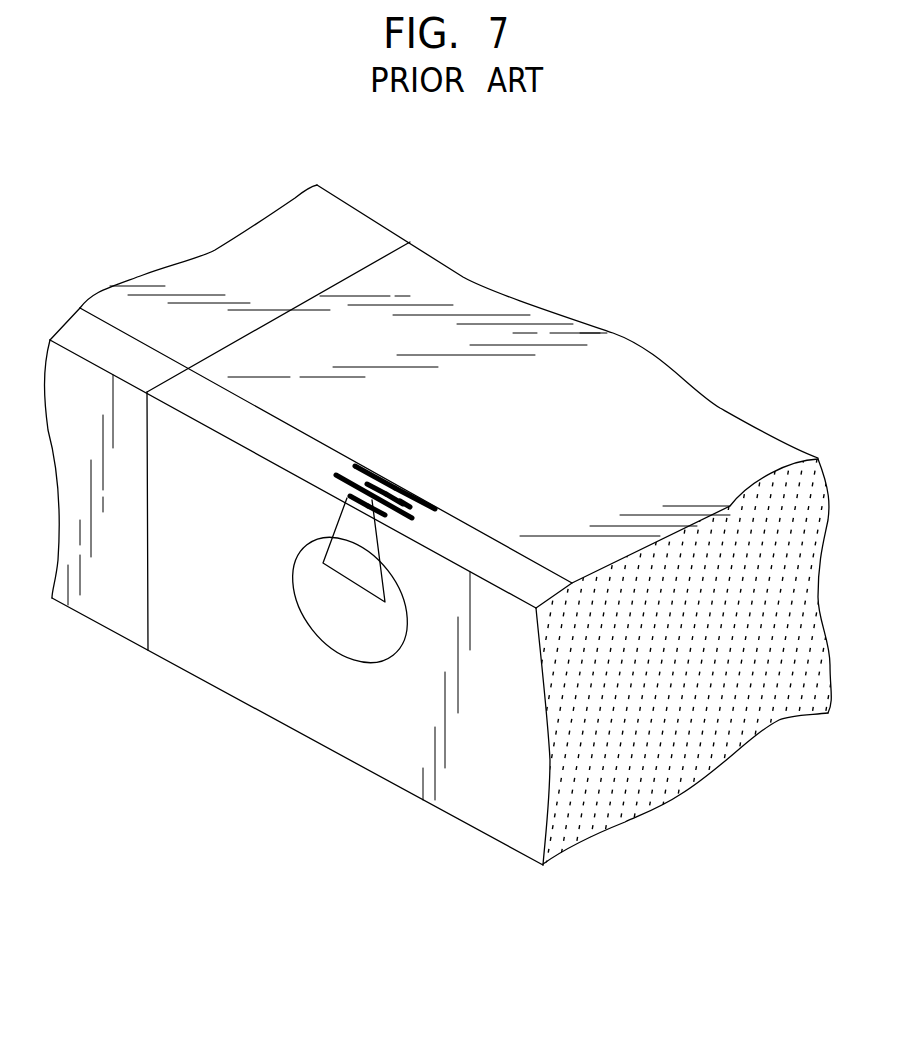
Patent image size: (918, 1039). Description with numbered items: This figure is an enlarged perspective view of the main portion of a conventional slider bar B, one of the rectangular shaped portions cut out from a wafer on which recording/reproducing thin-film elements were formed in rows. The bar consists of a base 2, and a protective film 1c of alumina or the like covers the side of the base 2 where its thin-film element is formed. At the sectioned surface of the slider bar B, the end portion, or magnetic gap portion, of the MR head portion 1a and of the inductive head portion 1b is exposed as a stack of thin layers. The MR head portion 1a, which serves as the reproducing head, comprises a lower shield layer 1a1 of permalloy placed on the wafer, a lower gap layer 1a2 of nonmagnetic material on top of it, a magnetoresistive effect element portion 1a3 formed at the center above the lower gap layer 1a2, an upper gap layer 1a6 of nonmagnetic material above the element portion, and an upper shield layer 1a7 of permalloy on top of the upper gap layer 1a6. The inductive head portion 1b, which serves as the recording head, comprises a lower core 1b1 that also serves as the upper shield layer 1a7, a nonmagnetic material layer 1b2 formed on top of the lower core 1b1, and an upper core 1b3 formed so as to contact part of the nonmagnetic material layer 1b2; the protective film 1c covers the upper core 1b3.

The slider bar B is at (635, 336).
The base 2 is at (668, 425).
The protective film 1c is at (212, 403).
The magnetoresistive (MR) head portion 1a is at (552, 504).
The lower shield layer 1a1 is at (362, 467).
The lower gap layer 1a2 is at (374, 480).
The magnetoresistive effect element portion 1a3 is at (392, 483).
The upper gap layer 1a6 is at (404, 498).
The upper shield layer 1a7 is at (432, 507).
The inductive head portion 1b is at (222, 465).
The lower core 1b1 is at (337, 477).
The nonmagnetic material layer 1b2 is at (347, 501).
The upper core 1b3 is at (352, 500).